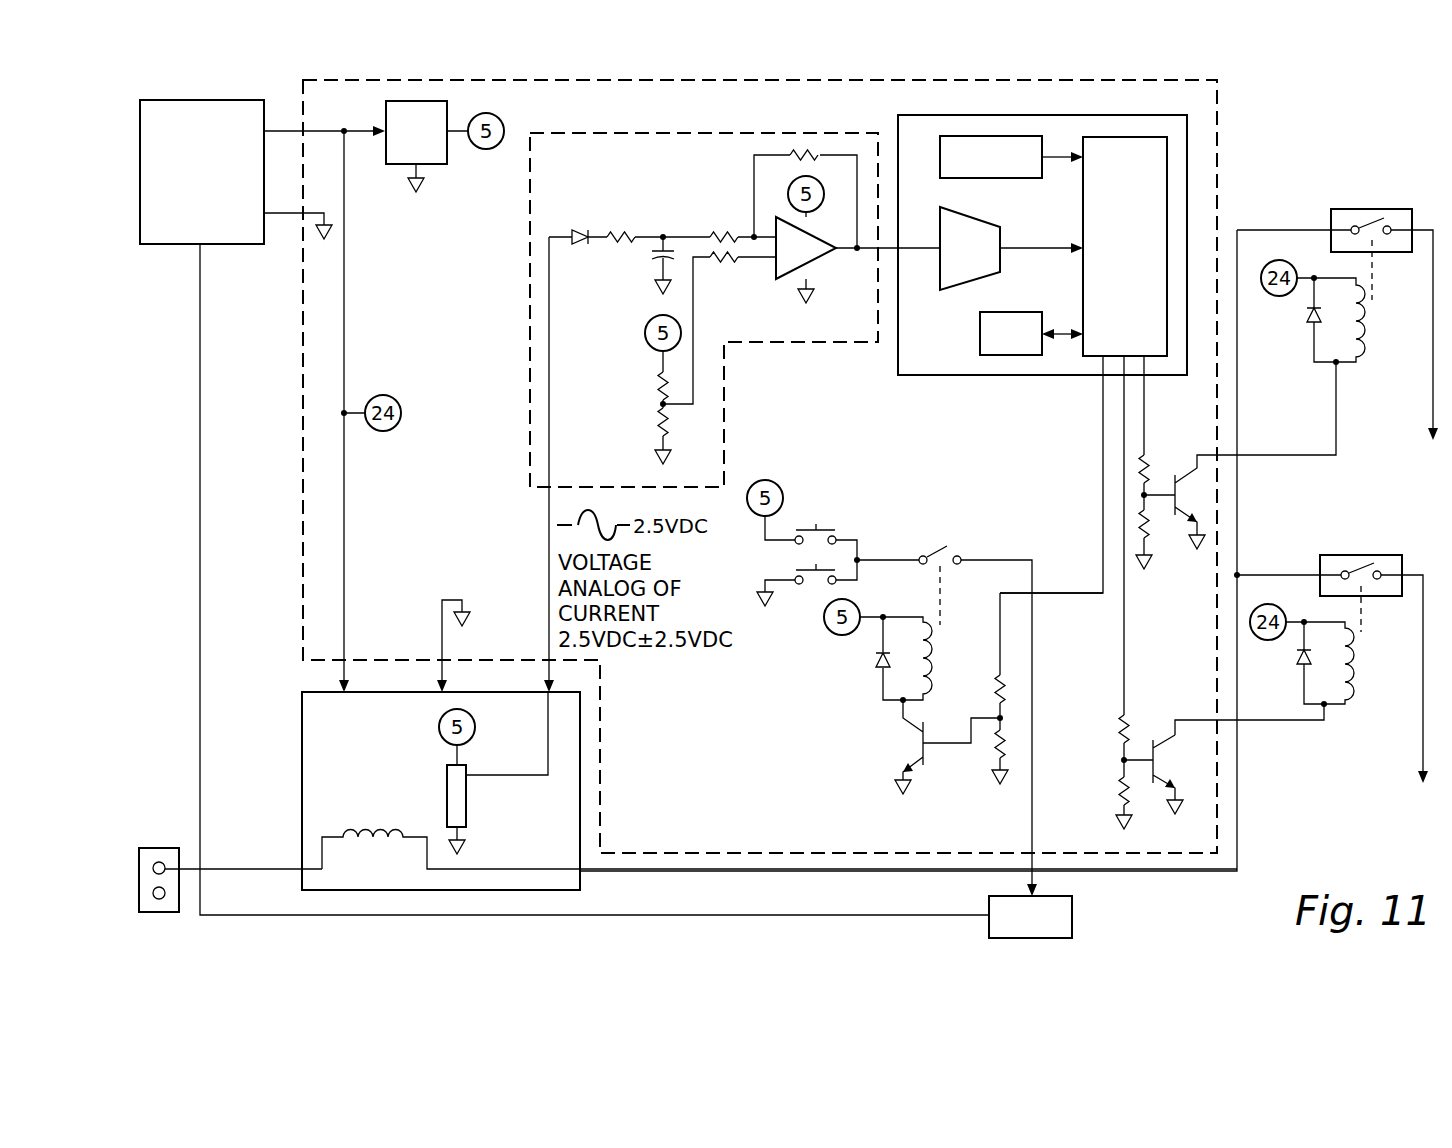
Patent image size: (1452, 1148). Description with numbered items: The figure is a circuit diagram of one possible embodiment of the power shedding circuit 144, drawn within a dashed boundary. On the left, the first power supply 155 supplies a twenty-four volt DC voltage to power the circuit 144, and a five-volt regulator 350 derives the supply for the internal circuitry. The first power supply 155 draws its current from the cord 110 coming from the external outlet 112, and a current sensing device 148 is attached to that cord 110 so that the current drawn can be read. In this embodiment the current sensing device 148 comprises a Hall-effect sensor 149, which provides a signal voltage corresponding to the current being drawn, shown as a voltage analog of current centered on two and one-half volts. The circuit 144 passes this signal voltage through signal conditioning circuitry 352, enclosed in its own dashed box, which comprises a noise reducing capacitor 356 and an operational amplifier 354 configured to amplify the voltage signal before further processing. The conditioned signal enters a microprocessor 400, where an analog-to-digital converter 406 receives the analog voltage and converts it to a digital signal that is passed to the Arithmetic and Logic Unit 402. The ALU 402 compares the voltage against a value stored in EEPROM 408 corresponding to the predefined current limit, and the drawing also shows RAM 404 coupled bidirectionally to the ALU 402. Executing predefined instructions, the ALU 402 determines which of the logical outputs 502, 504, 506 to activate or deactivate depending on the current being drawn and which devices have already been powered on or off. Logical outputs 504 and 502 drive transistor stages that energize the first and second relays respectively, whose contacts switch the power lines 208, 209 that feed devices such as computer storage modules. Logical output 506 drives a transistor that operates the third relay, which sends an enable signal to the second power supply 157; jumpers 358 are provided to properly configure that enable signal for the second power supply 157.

The power shedding circuit 144 is at (737, 825).
The first power supply 155 is at (176, 246).
The 5-volt regulator 350 is at (384, 118).
The signal conditioning circuitry 352 is at (529, 308).
The operational amplifier 354 is at (776, 272).
The noise reducing capacitor 356 is at (655, 260).
The jumpers 358 is at (836, 516).
The microprocessor 400 is at (1040, 376).
The Arithmetic and Logic Unit 402 is at (1107, 280).
The RAM 404 is at (978, 336).
The analog-to-digital converter 406 is at (1003, 260).
The EEPROM 408 is at (1020, 180).
The logical output 504 is at (1148, 398).
The logical output 502 is at (1122, 696).
The logical output 506 is at (1073, 594).
The power line 208 is at (1432, 403).
The power line 209 is at (1421, 751).
The current sensing device 148 is at (300, 732).
The Hall-effect sensor 149 is at (445, 785).
The external outlet 112 is at (160, 846).
The cord 110 is at (255, 866).
The second power supply 157 is at (1072, 916).